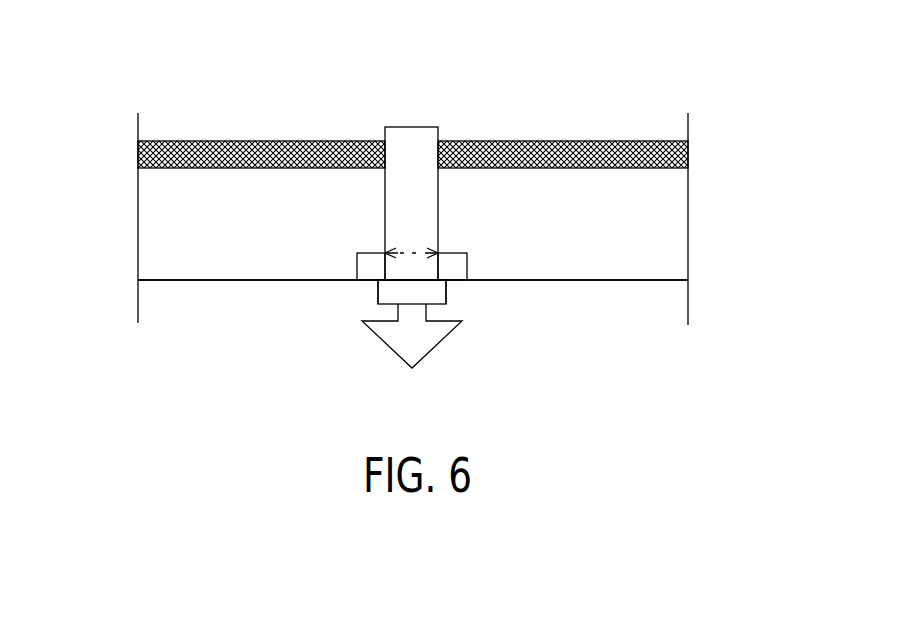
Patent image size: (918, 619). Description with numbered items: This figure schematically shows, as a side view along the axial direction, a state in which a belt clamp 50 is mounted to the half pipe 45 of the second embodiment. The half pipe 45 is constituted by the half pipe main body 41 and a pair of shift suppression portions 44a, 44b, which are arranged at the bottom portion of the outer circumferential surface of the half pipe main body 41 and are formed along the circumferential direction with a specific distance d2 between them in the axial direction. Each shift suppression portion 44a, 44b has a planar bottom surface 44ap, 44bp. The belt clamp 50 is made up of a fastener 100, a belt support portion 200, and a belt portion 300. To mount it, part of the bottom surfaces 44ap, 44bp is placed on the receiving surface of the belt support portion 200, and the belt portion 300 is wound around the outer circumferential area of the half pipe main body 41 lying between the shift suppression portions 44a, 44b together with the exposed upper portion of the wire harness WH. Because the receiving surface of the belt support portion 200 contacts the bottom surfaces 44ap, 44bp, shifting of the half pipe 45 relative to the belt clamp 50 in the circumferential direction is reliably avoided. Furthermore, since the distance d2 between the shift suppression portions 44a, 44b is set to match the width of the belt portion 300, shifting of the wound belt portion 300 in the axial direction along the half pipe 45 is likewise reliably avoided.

The belt clamp 50 is at (470, 93).
The half pipe main body 41 is at (620, 264).
The half pipe 45 is at (212, 288).
The wire harness WH is at (620, 141).
The belt portion 300 is at (415, 137).
The shift suppression portion 44a is at (370, 272).
The shift suppression portion 44b is at (453, 273).
The bottom surface 44ap is at (371, 282).
The bottom surface 44bp is at (453, 282).
The belt support portion 200 is at (446, 300).
The fastener 100 is at (438, 346).
The distance d2 is at (410, 250).